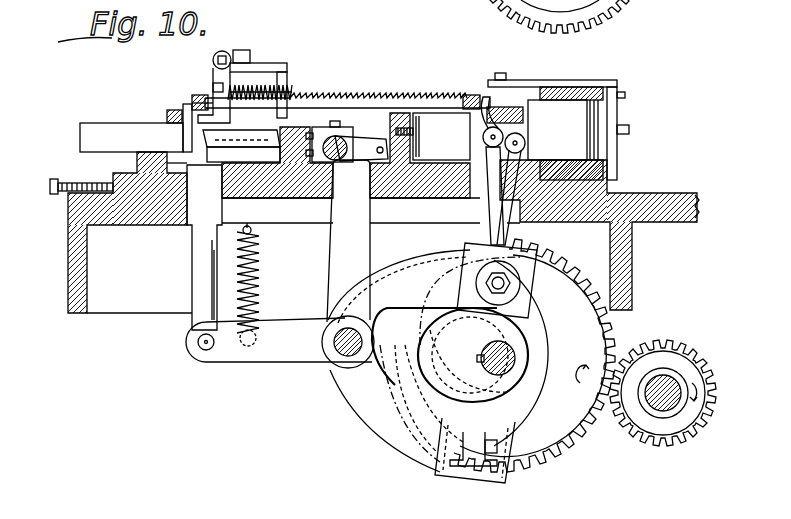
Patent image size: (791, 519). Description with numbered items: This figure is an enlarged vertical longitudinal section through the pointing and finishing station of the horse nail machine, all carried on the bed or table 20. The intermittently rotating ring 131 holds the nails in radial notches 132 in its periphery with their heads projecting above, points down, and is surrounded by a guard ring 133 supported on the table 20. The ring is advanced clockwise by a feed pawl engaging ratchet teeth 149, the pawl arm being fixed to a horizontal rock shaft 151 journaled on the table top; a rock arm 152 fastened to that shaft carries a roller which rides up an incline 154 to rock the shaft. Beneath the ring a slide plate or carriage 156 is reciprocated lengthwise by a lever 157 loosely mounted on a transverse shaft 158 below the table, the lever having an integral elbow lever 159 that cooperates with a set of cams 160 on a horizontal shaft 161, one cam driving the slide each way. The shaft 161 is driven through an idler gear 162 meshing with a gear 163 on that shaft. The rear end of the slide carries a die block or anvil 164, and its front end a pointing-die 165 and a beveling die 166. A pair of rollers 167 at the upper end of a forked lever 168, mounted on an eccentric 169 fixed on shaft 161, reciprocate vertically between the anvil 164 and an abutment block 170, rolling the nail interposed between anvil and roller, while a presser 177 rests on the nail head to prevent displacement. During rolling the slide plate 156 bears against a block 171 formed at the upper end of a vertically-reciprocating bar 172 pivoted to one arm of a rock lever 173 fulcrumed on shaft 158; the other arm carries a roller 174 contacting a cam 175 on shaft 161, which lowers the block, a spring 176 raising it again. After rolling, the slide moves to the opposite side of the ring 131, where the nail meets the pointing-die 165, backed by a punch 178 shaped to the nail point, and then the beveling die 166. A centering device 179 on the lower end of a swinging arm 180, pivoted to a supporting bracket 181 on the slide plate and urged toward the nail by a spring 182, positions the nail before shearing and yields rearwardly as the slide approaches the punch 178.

The bed or table 20 is at (648, 200).
The intermittently rotating ring 131 is at (462, 98).
The radial notches 132 is at (188, 108).
The guard ring 133 is at (512, 108).
The ratchet teeth 149 is at (347, 87).
The horizontal rock shaft 151 is at (336, 136).
The rock arm 152 is at (355, 149).
The incline 154 is at (441, 136).
The slide plate or carriage 156 is at (282, 192).
The lever 157 is at (371, 230).
The transverse shaft 158 is at (328, 364).
The elbow lever 159 is at (377, 427).
The cams 160 is at (393, 397).
The horizontal shaft 161 is at (515, 358).
The idler gear 162 is at (708, 364).
The gear 163 is at (617, 332).
The die block or anvil 164 is at (437, 137).
The pointing-die 165 is at (243, 155).
The beveling die 166 is at (192, 157).
The rollers 167 is at (565, 133).
The forked lever 168 is at (507, 232).
The eccentric 169 is at (510, 395).
The abutment block 170 is at (593, 133).
The block 171 is at (208, 247).
The vertically-reciprocating bar 172 is at (200, 290).
The rock lever 173 is at (279, 340).
The roller 174 is at (527, 297).
The cam 175 is at (475, 412).
The spring 176 is at (261, 289).
The presser 177 is at (485, 107).
The punch 178 is at (131, 137).
The centering device 179 is at (213, 126).
The swinging arm 180 is at (230, 79).
The supporting bracket 181 is at (275, 68).
The spring 182 is at (270, 87).